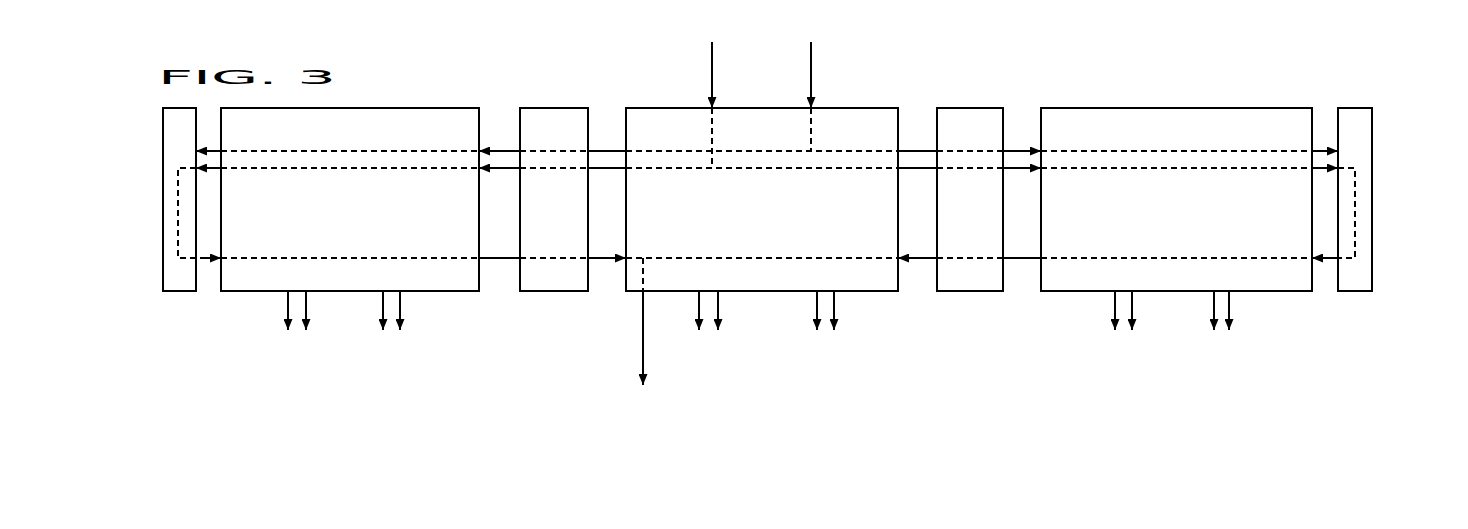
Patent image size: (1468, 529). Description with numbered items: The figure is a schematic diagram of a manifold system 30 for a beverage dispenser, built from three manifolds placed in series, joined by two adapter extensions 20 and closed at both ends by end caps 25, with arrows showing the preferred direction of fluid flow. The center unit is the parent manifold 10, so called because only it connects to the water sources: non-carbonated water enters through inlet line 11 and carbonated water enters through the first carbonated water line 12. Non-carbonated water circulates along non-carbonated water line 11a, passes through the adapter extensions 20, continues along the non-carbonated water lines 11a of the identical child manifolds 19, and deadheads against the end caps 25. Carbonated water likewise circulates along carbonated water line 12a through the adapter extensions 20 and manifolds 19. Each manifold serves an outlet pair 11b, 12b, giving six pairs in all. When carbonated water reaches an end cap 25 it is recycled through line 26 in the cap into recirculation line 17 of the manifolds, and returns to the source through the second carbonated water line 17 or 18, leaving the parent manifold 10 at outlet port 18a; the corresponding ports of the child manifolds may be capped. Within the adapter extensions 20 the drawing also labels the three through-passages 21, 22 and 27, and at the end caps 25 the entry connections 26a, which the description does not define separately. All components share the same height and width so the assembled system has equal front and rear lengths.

The parent manifold 10 is at (898, 108).
The inlet line 11 is at (716, 125).
The first carbonated water line 12 is at (815, 128).
The non-carbonated water line 11a is at (333, 150).
The carbonated water line 12a is at (350, 170).
The non-carbonated water outlet 11b is at (286, 334).
The carbonated water outlet 12b is at (308, 334).
The recirculation line 17 is at (410, 257).
The second carbonated water line 18 is at (646, 275).
The outlet port 18a is at (640, 295).
The manifold 19 is at (428, 107).
The adapter extension 20 is at (548, 292).
The supply air passage 21 is at (570, 150).
The outdoor air passage 22 is at (568, 172).
The end cap 25 is at (176, 292).
The line 26 is at (178, 232).
The circulation duct inlet 26a is at (1340, 150).
The return air passage 27 is at (563, 243).
The manifold system 30 is at (518, 78).